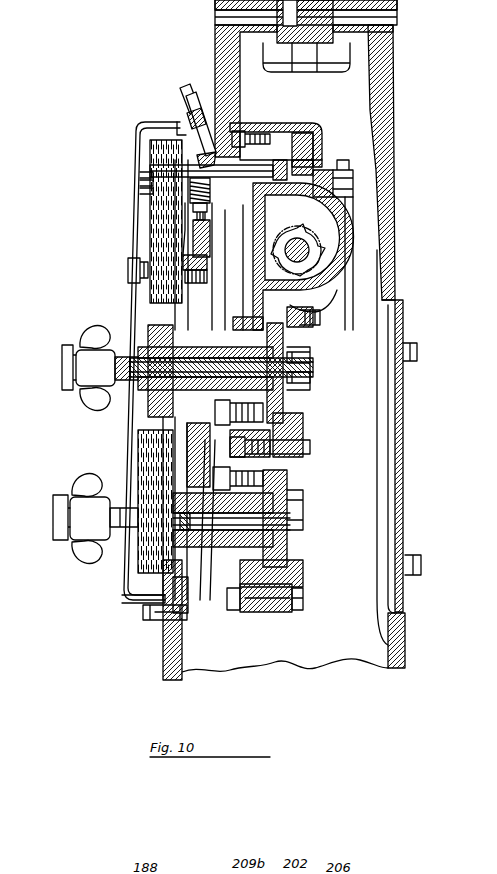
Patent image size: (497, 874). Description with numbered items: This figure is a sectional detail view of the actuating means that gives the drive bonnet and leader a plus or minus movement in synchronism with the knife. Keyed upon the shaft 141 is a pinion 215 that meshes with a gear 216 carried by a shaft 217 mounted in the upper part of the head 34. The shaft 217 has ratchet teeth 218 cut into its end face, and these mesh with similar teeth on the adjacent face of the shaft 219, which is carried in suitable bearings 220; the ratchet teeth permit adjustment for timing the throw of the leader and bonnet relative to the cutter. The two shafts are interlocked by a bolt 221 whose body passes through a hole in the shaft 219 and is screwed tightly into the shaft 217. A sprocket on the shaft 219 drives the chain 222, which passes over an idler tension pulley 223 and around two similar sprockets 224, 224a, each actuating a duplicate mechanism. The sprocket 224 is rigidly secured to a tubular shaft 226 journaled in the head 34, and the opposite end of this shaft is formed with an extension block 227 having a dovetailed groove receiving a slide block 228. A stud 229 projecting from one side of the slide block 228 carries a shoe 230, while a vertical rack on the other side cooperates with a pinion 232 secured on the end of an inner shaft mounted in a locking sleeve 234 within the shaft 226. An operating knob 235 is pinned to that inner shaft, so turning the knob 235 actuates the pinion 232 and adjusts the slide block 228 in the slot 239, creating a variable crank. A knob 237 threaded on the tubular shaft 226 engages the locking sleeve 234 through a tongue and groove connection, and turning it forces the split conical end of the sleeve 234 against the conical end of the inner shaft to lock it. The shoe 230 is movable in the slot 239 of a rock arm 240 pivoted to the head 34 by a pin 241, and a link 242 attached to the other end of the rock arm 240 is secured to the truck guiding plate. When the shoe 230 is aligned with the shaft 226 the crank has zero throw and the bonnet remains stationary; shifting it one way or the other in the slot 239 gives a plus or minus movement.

The head 34 is at (393, 92).
The shaft 141 is at (320, 250).
The pinion 215 is at (310, 223).
The gear 216 is at (313, 142).
The shaft 217 is at (353, 178).
The ratchet teeth 218 is at (250, 178).
The shaft 219 is at (137, 168).
The bearings 220 is at (186, 124).
The bolt 221 is at (140, 183).
The chain 222 is at (152, 212).
The idler tension pulley 223 is at (130, 283).
The sprocket 224 is at (175, 322).
The sprocket 224a is at (140, 560).
The tubular shaft 226 is at (208, 346).
The extension block 227 is at (283, 312).
The slide block 228 is at (283, 380).
The stud 229 is at (300, 357).
The shoe 230 is at (300, 376).
The pinion 232 is at (290, 527).
The locking sleeve 234 is at (195, 585).
The operating knob 235 is at (64, 368).
The knob 237 is at (100, 332).
The slot 239 is at (300, 412).
The rock arm 240 is at (303, 572).
The pin 241 is at (303, 596).
The link 242 is at (330, 316).